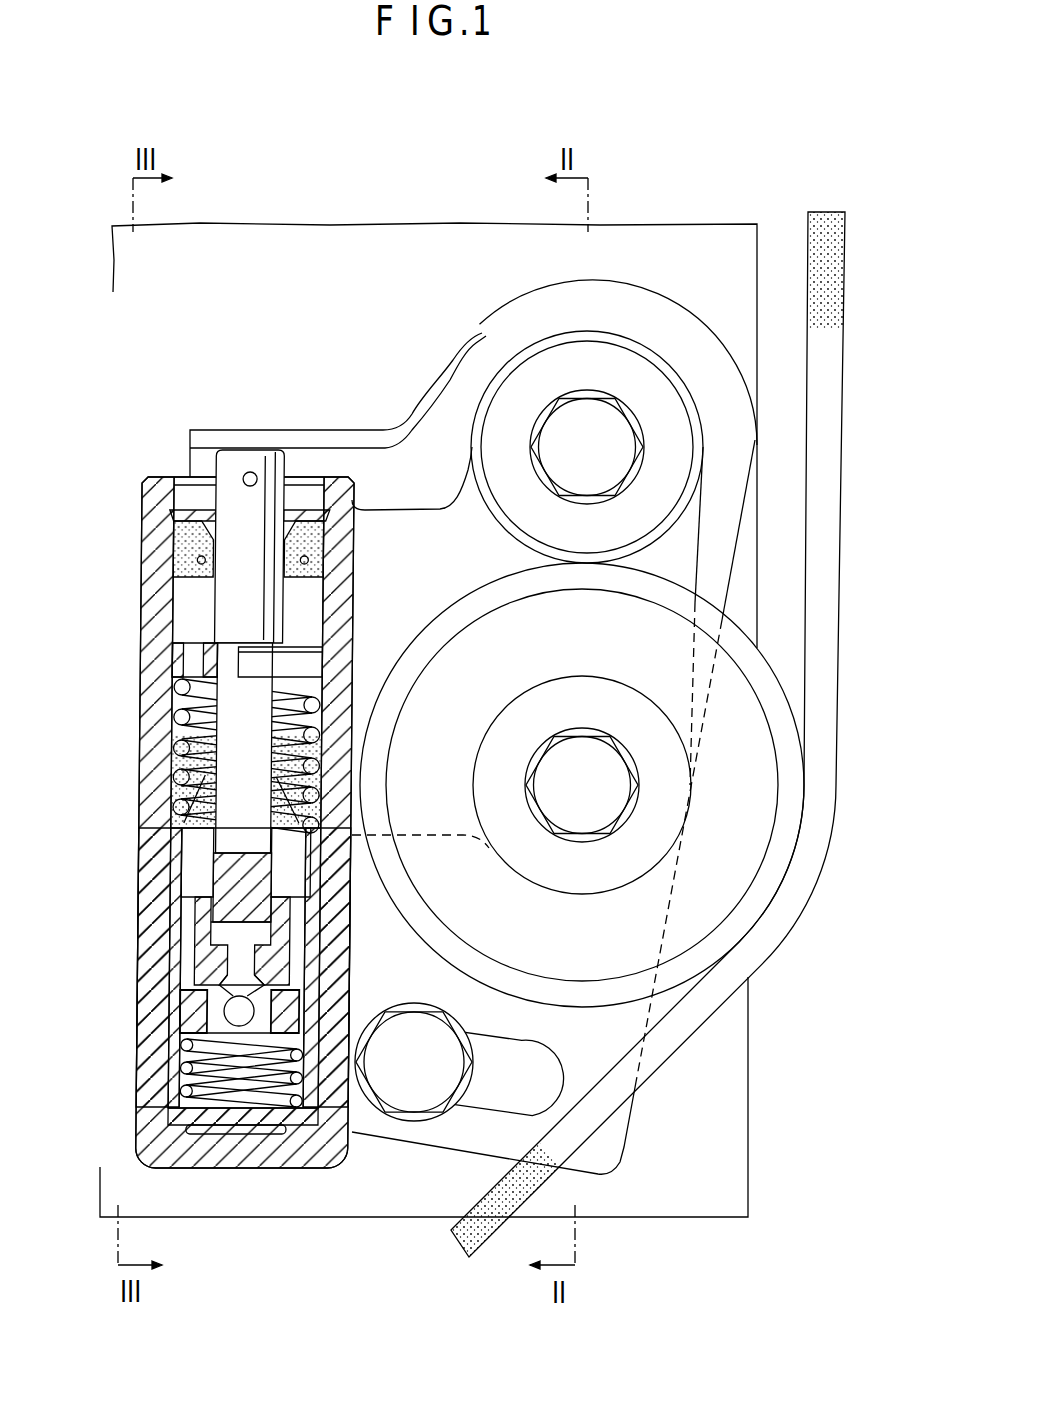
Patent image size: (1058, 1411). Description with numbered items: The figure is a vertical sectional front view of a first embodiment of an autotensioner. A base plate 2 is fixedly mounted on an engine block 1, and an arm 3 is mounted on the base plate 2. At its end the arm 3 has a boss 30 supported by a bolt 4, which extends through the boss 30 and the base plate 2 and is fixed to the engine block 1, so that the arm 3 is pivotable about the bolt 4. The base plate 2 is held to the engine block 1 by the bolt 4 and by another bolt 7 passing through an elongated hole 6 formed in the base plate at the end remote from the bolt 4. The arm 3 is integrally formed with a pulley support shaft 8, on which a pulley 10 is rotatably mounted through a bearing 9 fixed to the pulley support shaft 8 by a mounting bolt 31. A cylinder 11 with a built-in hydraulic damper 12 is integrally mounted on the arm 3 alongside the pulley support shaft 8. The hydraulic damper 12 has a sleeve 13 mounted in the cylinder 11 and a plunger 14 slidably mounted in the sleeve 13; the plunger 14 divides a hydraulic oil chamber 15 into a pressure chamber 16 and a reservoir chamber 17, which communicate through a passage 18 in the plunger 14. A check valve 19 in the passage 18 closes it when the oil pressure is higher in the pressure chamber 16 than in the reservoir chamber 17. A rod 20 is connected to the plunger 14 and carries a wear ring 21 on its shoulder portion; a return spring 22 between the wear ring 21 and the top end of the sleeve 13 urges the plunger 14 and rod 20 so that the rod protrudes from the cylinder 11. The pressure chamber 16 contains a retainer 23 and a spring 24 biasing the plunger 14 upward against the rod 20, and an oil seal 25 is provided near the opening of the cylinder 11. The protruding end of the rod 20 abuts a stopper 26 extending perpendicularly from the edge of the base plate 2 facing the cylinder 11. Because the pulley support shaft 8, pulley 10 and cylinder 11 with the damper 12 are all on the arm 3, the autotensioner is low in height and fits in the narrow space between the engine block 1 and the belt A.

The engine block 1 is at (245, 243).
The base plate 2 is at (590, 298).
The arm 3 is at (423, 525).
The bolt 4 is at (615, 437).
The elongated hole 6 is at (520, 1107).
The bolt 7 is at (405, 1085).
The pulley support shaft 8 is at (567, 886).
The bearing 9 is at (750, 777).
The pulley 10 is at (760, 888).
The cylinder 11 is at (155, 603).
The hydraulic damper 12 is at (162, 758).
The sleeve 13 is at (175, 968).
The plunger 14 is at (196, 950).
The hydraulic oil chamber 15 is at (165, 888).
The pressure chamber 16 is at (193, 1034).
The reservoir chamber 17 is at (170, 827).
The passage 18 is at (224, 1002).
The check valve 19 is at (187, 1088).
The rod 20 is at (227, 552).
The wear ring 21 is at (173, 667).
The return spring 22 is at (180, 717).
The retainer 23 is at (252, 1035).
The spring 24 is at (284, 1050).
The oil seal 25 is at (187, 513).
The stopper 26 is at (318, 438).
The boss 30 is at (520, 353).
The mounting bolt 31 is at (565, 774).
The belt A is at (824, 298).